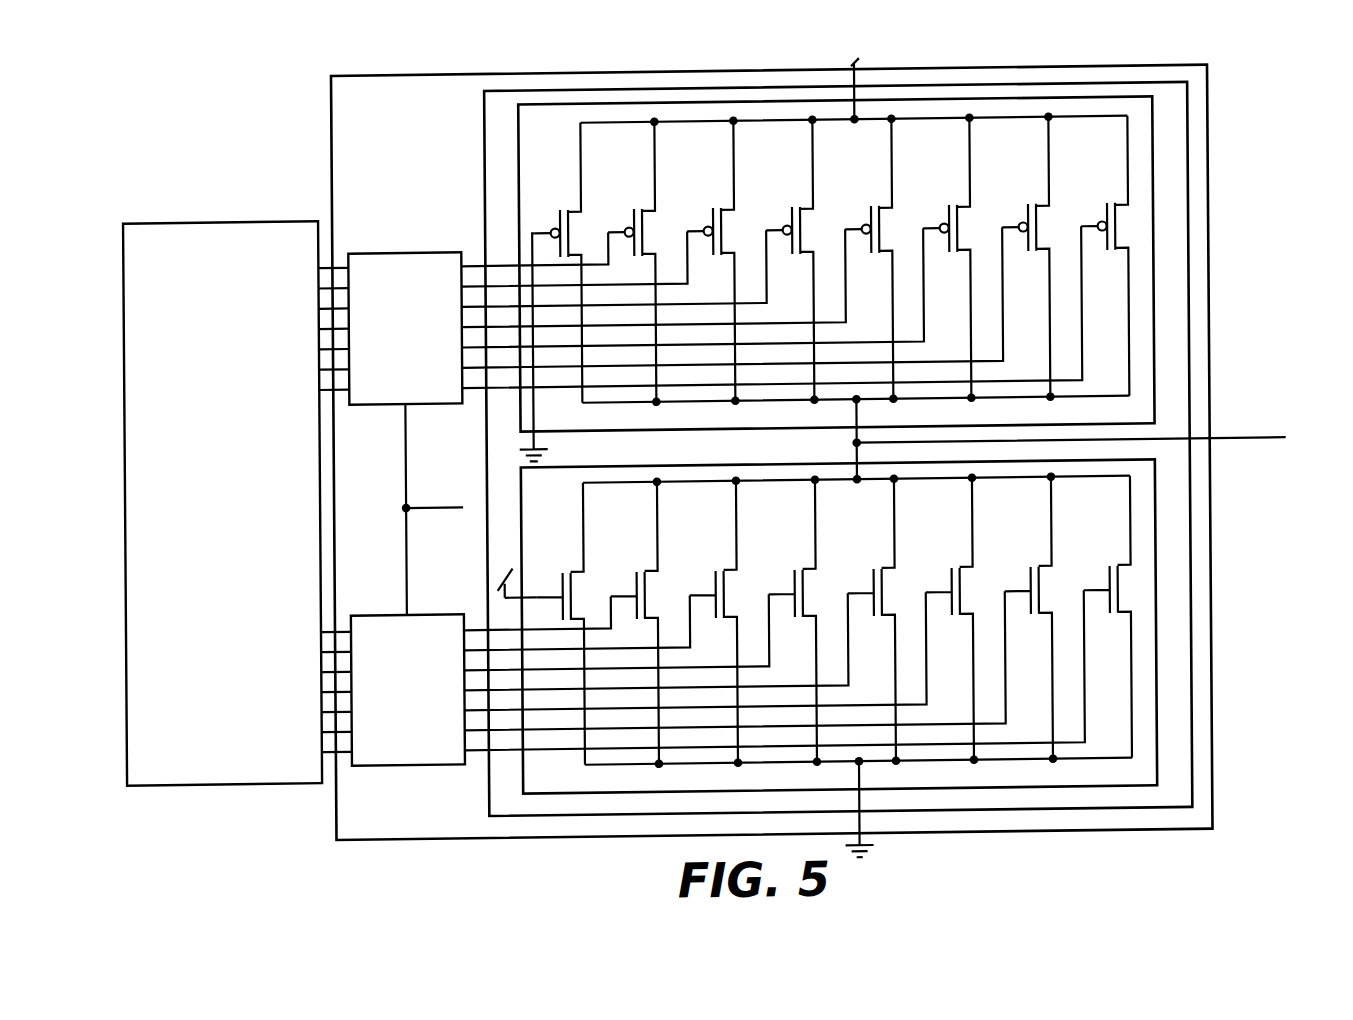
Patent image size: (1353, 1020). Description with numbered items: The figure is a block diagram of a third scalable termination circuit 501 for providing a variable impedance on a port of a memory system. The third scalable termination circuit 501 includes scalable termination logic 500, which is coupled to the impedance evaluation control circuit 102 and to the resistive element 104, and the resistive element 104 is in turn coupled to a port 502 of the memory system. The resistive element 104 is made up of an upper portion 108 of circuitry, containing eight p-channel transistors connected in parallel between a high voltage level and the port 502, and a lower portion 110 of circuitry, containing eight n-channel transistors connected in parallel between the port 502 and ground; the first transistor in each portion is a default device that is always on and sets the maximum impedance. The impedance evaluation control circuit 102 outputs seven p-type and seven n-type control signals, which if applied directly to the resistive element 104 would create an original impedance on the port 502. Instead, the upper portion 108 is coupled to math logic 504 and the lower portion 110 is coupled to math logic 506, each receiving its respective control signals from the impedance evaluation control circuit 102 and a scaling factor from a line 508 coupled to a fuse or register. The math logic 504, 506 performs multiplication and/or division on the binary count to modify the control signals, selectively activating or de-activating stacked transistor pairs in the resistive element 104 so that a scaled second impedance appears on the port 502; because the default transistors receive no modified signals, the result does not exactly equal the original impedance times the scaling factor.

The scalable termination logic 500 is at (329, 96).
The third scalable termination circuit 501 is at (211, 109).
The impedance evaluation control circuit 102 is at (221, 221).
The resistive element 104 is at (483, 154).
The upper portion of circuitry 108 is at (1152, 140).
The lower portion of circuitry 110 is at (1151, 530).
The port 502 is at (1239, 450).
The math logic 504 is at (444, 254).
The math logic 506 is at (425, 767).
The line 508 is at (413, 513).